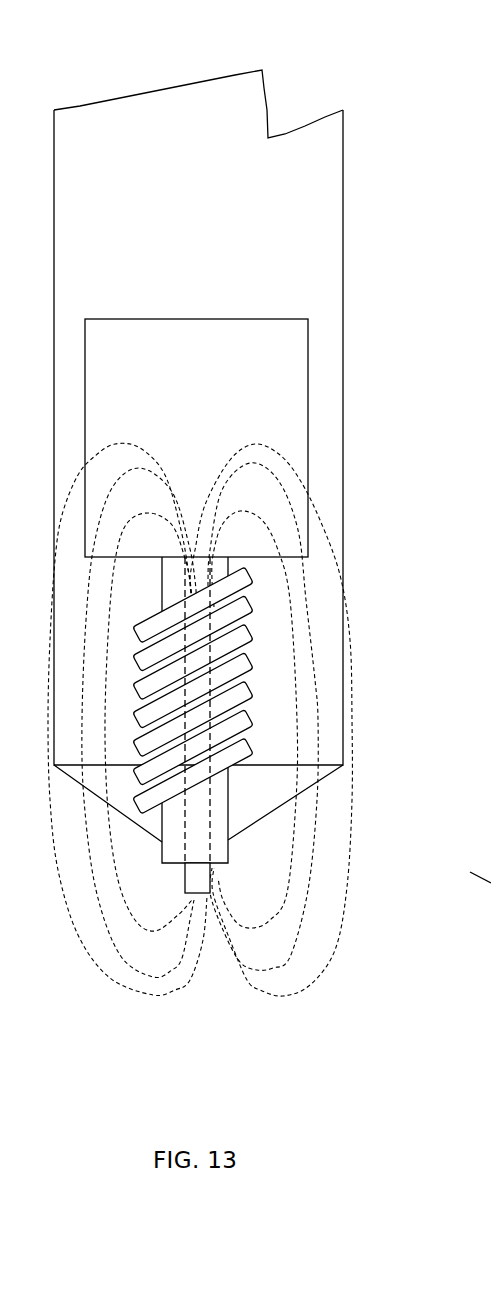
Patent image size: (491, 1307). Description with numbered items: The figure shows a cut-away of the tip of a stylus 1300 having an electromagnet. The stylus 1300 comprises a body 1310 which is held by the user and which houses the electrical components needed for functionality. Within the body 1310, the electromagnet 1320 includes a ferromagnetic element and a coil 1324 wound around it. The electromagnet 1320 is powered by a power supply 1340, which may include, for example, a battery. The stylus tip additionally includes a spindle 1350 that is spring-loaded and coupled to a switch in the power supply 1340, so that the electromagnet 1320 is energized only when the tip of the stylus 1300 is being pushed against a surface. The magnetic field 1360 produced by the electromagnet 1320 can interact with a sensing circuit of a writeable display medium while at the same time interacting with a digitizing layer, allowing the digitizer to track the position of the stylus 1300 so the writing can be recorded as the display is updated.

The stylus 1300 is at (307, 58).
The body 1310 is at (238, 233).
The power supply 1340 is at (229, 432).
The electromagnet 1320 is at (285, 710).
The coil 1324 is at (217, 750).
The spindle 1350 is at (198, 887).
The magnetic field 1360 is at (310, 906).